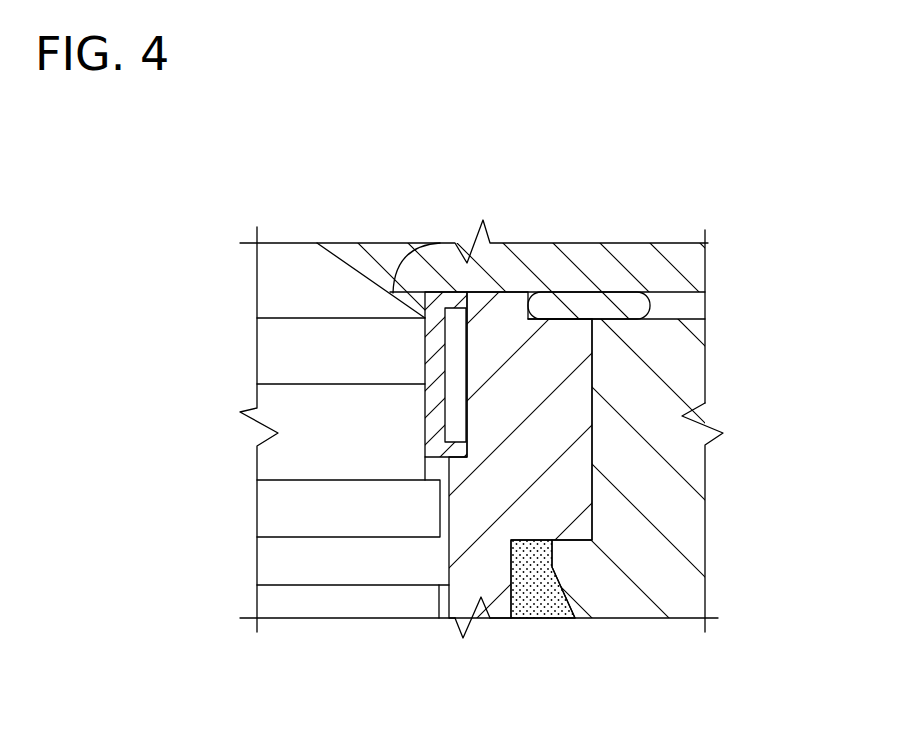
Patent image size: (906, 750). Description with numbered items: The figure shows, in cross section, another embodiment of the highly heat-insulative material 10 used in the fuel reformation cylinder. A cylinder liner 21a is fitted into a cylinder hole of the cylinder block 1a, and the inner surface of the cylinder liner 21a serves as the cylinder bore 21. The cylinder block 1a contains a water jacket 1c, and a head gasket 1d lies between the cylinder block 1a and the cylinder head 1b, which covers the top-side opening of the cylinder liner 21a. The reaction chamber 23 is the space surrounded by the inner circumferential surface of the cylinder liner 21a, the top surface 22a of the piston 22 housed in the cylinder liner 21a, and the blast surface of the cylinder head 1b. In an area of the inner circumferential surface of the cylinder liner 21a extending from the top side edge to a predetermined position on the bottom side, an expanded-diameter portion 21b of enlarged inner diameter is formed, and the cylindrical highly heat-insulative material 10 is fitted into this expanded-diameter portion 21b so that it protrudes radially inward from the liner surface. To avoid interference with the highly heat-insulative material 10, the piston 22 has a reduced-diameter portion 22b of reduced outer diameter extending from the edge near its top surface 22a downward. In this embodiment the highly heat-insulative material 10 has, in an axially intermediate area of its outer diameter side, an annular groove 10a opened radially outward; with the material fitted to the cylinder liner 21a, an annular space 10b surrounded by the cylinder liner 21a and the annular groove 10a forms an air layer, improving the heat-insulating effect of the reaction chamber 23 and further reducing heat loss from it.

The cylinder block 1a is at (680, 520).
The cylinder head 1b is at (637, 256).
The water jacket 1c is at (537, 600).
The head gasket 1d is at (633, 307).
The highly heat-insulative material 10 is at (439, 284).
The annular groove 10a is at (469, 329).
The annular space 10b is at (455, 366).
The cylinder bore 21 is at (446, 557).
The cylinder liner 21a is at (542, 343).
The expanded-diameter portion 21b is at (455, 415).
The piston 22 is at (250, 510).
The top surface 22a is at (256, 384).
The reduced-diameter portion 22b is at (434, 483).
The reaction chamber 23 is at (312, 353).